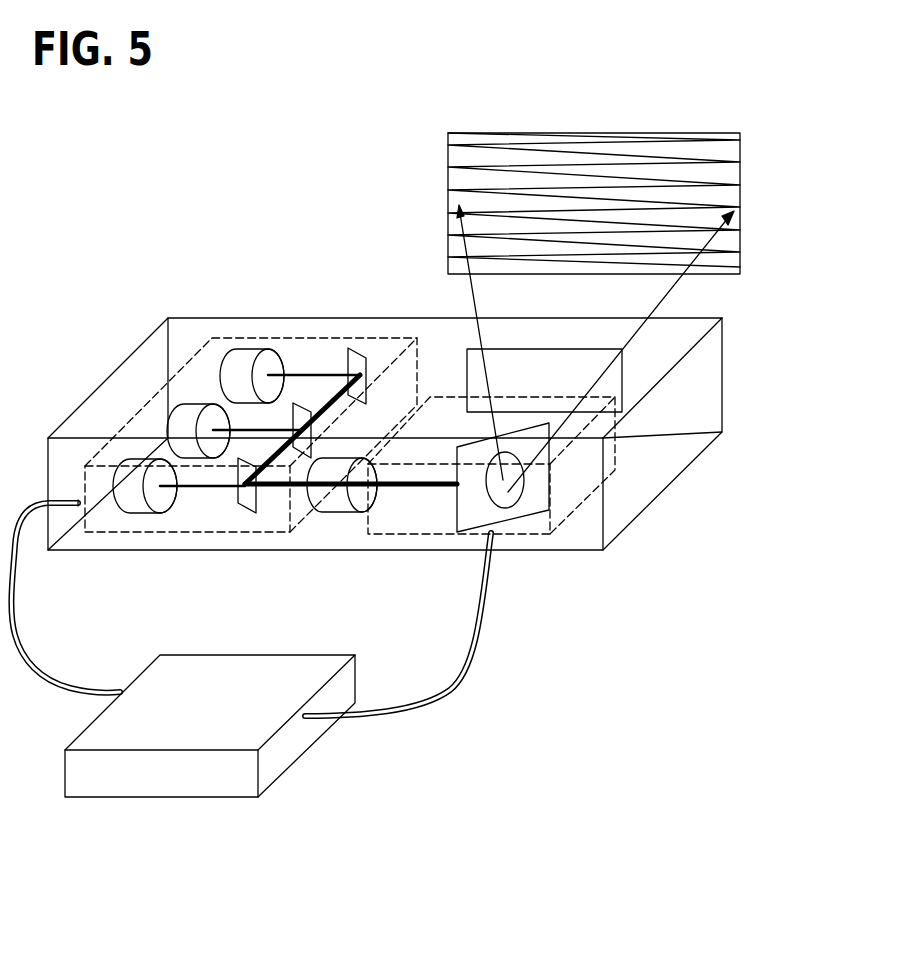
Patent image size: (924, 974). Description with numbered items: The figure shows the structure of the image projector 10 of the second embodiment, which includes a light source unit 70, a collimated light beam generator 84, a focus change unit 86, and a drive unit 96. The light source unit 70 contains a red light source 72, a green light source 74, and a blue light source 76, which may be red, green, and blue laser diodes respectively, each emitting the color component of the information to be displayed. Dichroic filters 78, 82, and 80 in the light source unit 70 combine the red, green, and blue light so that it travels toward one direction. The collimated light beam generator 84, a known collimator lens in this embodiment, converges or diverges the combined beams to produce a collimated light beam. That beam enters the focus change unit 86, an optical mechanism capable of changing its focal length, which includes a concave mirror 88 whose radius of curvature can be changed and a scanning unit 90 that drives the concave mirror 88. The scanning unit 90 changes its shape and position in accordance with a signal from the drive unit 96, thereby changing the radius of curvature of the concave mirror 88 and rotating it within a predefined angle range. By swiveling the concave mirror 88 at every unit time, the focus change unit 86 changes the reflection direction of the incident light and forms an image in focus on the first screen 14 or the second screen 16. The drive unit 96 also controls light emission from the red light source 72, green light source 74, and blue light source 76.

The image projector 10 is at (207, 186).
The first screen 14 is at (642, 203).
The second screen 16 is at (742, 197).
The light source unit 70 is at (310, 337).
The red light source 72 is at (112, 487).
The green light source 74 is at (165, 420).
The blue light source 76 is at (233, 350).
The dichroic filter 78 is at (357, 358).
The dichroic filter 80 is at (297, 460).
The dichroic filter 82 is at (242, 505).
The collimated light beam generator 84 is at (333, 518).
The focus change unit 86 is at (610, 473).
The concave mirror 88 is at (510, 497).
The scanning unit 90 is at (468, 517).
The drive unit 96 is at (212, 782).